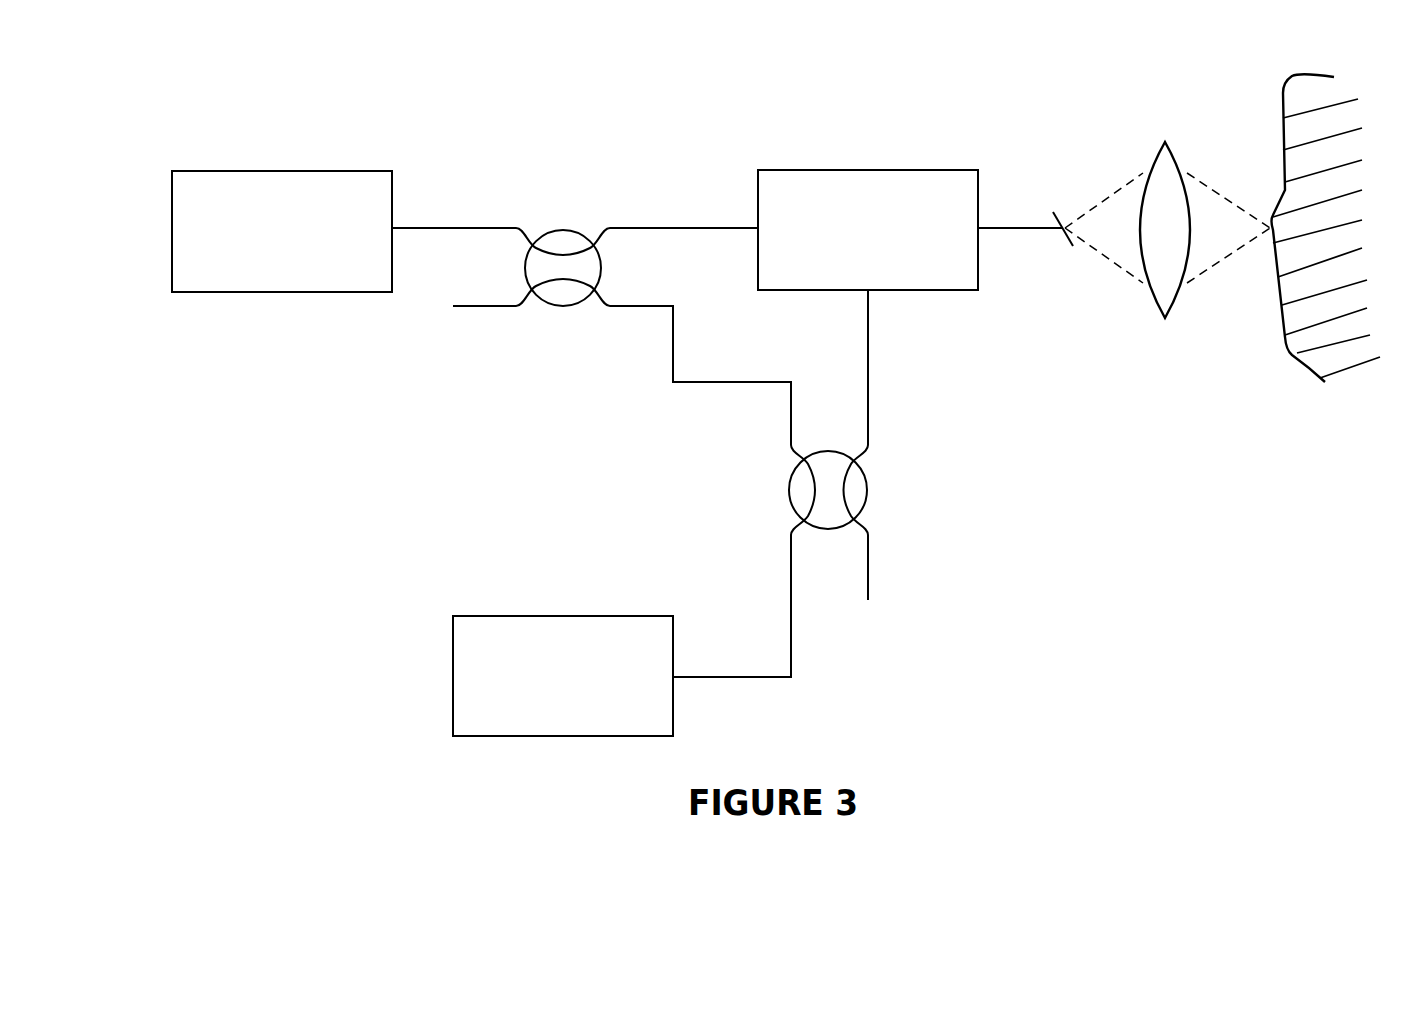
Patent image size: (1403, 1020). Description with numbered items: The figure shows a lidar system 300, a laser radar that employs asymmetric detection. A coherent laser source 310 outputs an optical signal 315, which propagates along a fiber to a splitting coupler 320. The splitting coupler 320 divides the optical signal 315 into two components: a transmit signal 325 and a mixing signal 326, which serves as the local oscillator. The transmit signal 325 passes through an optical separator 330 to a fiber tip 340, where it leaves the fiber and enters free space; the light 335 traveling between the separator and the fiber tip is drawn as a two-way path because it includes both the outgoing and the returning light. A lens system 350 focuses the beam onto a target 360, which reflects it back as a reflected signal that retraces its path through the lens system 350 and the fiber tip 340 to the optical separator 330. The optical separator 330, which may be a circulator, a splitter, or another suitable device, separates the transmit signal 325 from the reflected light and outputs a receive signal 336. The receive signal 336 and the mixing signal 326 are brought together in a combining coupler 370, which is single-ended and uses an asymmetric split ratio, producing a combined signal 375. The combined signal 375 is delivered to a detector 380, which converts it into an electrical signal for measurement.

The lidar system 300 is at (1147, 691).
The coherent laser source 310 is at (277, 170).
The optical signal 315 is at (422, 249).
The splitting coupler 320 is at (560, 196).
The transmit signal 325 is at (631, 249).
The mixing signal 326 is at (692, 402).
The optical separator 330 is at (868, 170).
The emitted and reflected light 335 is at (1044, 252).
The receive signal 336 is at (886, 323).
The fiber tip 340 is at (1060, 188).
The lens system 350 is at (1161, 347).
The target 360 is at (1316, 412).
The combining coupler 370 is at (896, 491).
The combined signal 375 is at (771, 565).
The detector 380 is at (570, 616).